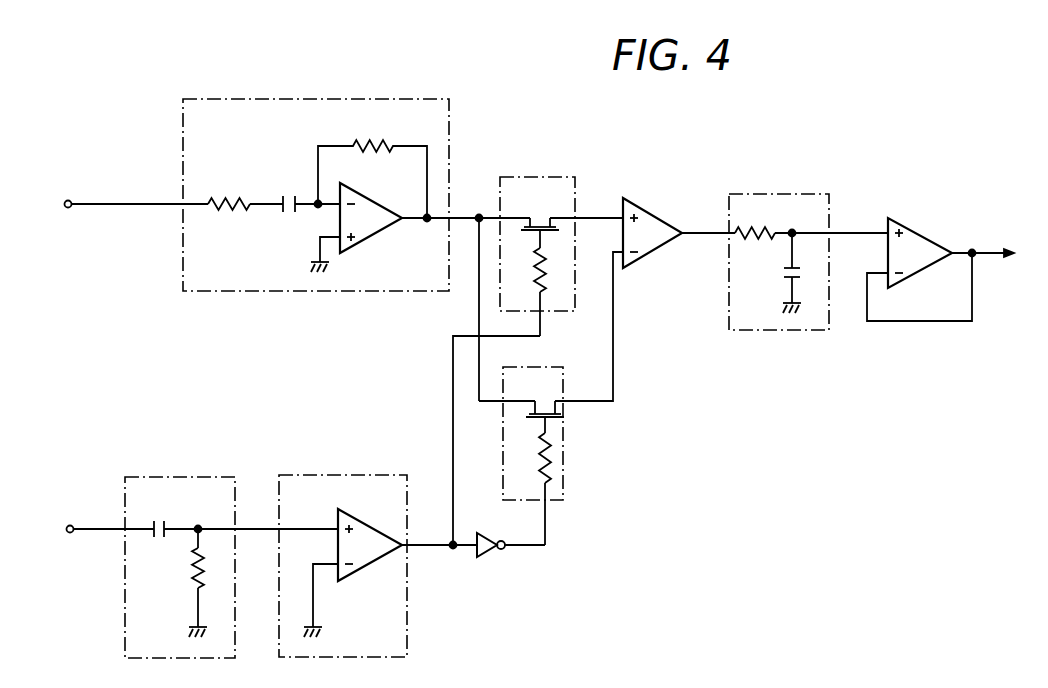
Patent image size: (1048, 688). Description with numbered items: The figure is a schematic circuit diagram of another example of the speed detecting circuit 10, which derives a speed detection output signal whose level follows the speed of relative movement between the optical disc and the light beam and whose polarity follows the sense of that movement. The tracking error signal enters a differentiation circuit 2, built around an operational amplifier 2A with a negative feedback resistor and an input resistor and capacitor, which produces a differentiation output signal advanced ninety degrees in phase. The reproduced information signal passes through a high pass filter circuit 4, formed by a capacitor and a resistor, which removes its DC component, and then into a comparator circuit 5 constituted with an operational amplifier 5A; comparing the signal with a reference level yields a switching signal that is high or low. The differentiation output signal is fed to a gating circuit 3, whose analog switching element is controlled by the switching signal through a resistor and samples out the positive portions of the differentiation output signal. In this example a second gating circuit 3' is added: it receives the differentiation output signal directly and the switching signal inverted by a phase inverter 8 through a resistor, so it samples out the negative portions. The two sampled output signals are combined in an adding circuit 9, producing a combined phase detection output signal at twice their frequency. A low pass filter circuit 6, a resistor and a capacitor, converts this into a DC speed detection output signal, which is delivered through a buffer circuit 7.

The speed detecting circuit 10 is at (687, 133).
The differentiation circuit 2 is at (203, 99).
The operational amplifier 2A is at (379, 238).
The gating circuit 3 is at (537, 233).
The gating circuit 3' is at (545, 456).
The high pass filter circuit 4 is at (143, 477).
The comparator circuit 5 is at (295, 475).
The operational amplifier 5A is at (371, 526).
The low pass filter circuit 6 is at (810, 194).
The buffer circuit 7 is at (914, 230).
The phase inverter 8 is at (488, 553).
The adding circuit 9 is at (650, 213).